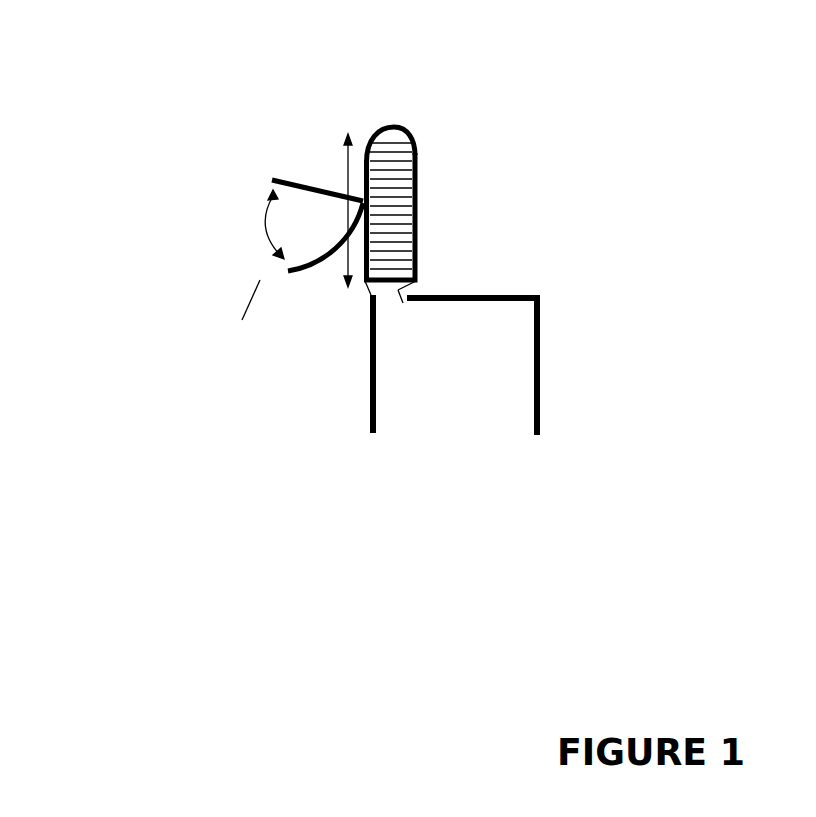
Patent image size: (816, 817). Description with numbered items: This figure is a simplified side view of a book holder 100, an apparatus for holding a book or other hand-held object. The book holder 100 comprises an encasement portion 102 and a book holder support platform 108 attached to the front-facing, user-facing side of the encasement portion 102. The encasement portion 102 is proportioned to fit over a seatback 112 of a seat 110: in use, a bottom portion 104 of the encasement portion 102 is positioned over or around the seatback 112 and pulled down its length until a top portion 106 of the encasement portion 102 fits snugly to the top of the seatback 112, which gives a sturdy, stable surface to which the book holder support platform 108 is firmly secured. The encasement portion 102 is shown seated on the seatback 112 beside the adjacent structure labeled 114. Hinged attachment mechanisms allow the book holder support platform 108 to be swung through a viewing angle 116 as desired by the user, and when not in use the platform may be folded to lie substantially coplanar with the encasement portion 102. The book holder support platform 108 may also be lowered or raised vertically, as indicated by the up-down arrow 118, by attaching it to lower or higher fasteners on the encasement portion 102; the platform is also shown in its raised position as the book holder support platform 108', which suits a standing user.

The book holder 100 is at (418, 220).
The encasement portion 102 is at (414, 173).
The bottom portion 104 is at (418, 257).
The top portion 106 is at (377, 141).
The book holder support platform 108 is at (256, 238).
The book holder support platform in raised position 108' is at (249, 157).
The seat 110 is at (467, 296).
The seatback 112 is at (398, 290).
The post 114 is at (372, 367).
The viewing angle 116 is at (263, 233).
The up-down arrow 118 is at (343, 171).